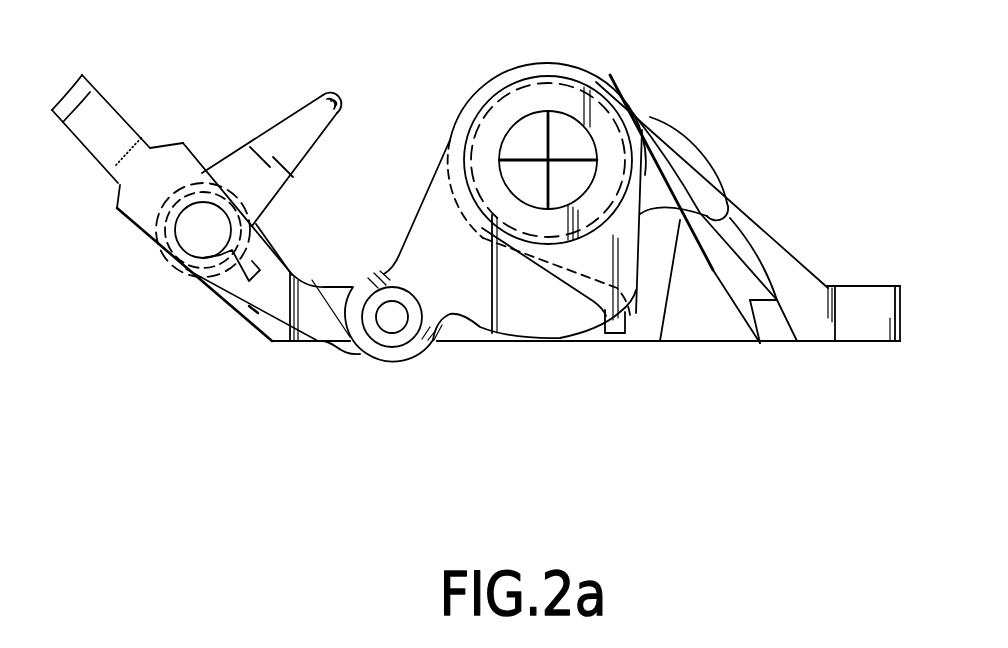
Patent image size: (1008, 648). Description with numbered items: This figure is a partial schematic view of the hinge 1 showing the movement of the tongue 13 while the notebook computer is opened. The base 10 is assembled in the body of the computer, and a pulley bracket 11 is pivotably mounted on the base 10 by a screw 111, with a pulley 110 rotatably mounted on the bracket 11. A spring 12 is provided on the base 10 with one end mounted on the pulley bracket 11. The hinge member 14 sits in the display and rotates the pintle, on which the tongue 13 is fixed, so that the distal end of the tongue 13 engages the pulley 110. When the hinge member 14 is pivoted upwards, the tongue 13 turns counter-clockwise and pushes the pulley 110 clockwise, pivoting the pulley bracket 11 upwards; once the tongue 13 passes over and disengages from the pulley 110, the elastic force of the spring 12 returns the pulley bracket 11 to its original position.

The hinge 1 is at (328, 507).
The base 10 is at (855, 298).
The pulley bracket 11 is at (555, 332).
The pulley 110 is at (422, 353).
The screw 111 is at (572, 128).
The spring 12 is at (745, 302).
The tongue 13 is at (291, 116).
The hinge member 14 is at (103, 152).